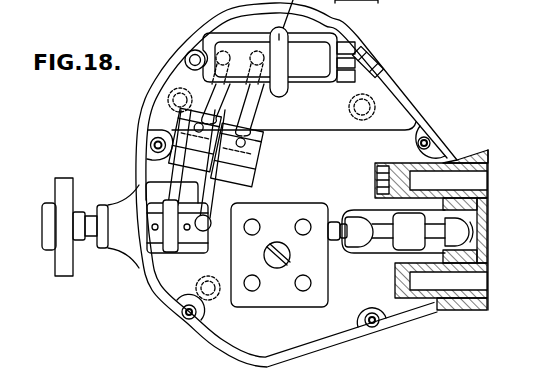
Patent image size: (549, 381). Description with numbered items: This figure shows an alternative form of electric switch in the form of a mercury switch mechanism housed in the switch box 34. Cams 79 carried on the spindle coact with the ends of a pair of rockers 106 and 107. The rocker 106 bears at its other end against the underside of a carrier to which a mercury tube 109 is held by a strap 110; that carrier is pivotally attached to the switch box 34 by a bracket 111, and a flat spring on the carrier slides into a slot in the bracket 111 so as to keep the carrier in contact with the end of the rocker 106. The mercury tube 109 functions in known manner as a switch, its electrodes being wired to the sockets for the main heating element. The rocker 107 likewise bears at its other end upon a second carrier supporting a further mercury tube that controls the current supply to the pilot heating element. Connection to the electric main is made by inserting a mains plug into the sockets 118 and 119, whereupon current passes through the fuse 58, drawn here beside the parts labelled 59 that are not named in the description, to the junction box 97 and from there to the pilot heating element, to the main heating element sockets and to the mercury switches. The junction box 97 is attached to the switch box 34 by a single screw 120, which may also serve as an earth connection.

The switch box 34 is at (410, 108).
The fuse 58 is at (384, 235).
The contact member 59 is at (333, 215).
The cams 79 is at (203, 245).
The junction box 97 is at (283, 205).
The rocker 106 is at (213, 88).
The rocker 107 is at (244, 108).
The mercury tube 109 is at (313, 47).
The strap 110 is at (341, 20).
The bracket 111 is at (363, 73).
The socket 118 is at (482, 182).
The socket 119 is at (483, 281).
The screw 120 is at (278, 269).